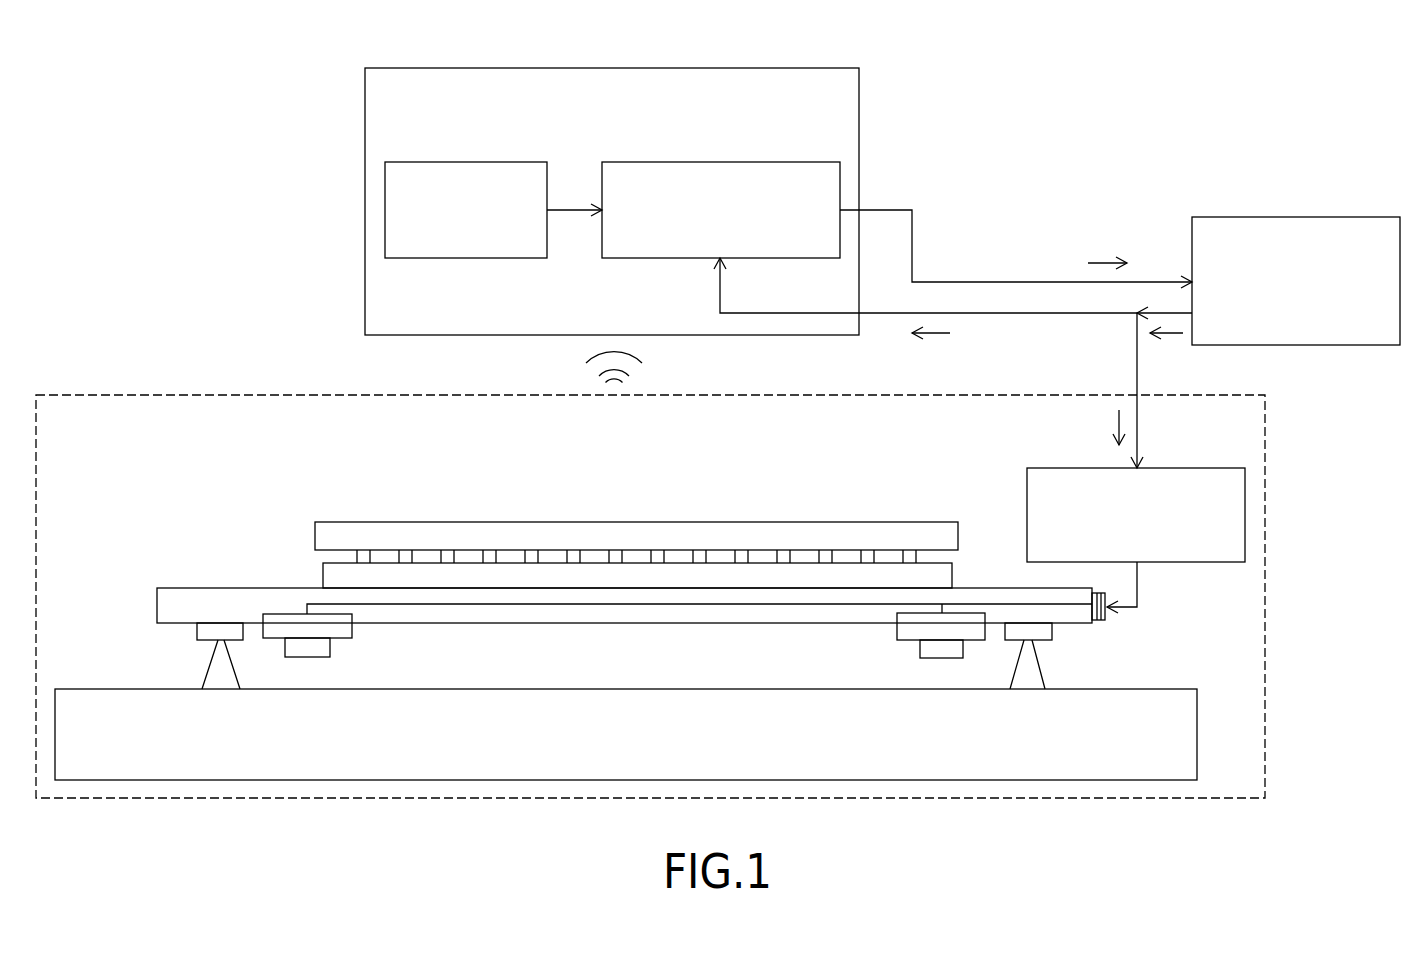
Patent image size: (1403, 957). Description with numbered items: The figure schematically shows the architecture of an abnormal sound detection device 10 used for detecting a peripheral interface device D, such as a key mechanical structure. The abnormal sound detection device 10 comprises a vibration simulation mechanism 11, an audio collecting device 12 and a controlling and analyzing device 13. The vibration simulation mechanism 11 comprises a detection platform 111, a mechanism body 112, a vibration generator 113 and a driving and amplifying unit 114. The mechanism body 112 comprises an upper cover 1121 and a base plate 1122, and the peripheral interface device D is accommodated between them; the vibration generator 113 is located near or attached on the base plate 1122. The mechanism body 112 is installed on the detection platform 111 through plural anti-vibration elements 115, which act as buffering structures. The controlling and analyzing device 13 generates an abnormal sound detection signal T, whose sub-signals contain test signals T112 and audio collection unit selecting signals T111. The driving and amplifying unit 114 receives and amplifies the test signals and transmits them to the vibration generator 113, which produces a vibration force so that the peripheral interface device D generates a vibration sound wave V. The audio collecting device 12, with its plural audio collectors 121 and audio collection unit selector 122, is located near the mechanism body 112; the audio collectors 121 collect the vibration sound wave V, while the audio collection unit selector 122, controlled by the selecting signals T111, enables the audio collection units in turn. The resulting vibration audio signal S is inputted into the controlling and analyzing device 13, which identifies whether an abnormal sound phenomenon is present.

The abnormal sound detection device 10 is at (128, 98).
The vibration simulation mechanism 11 is at (165, 381).
The audio collecting device 12 is at (657, 78).
The audio collectors 121 is at (487, 170).
The audio collection unit selector 122 is at (755, 170).
The controlling and analyzing device 13 is at (1332, 228).
The detection platform 111 is at (157, 707).
The mechanism body 112 is at (587, 554).
The upper cover 1121 is at (740, 538).
The base plate 1122 is at (238, 590).
The vibration generator 113 is at (338, 627).
The driving and amplifying unit 114 is at (1190, 552).
The anti-vibration elements 115 is at (217, 678).
The peripheral interface device D is at (470, 578).
The vibration sound wave V is at (642, 373).
The vibration audio signal S is at (1110, 258).
The abnormal sound detection signal T is at (1165, 338).
The audio collection unit selecting signal T111 is at (930, 340).
The test signal T112 is at (1117, 428).